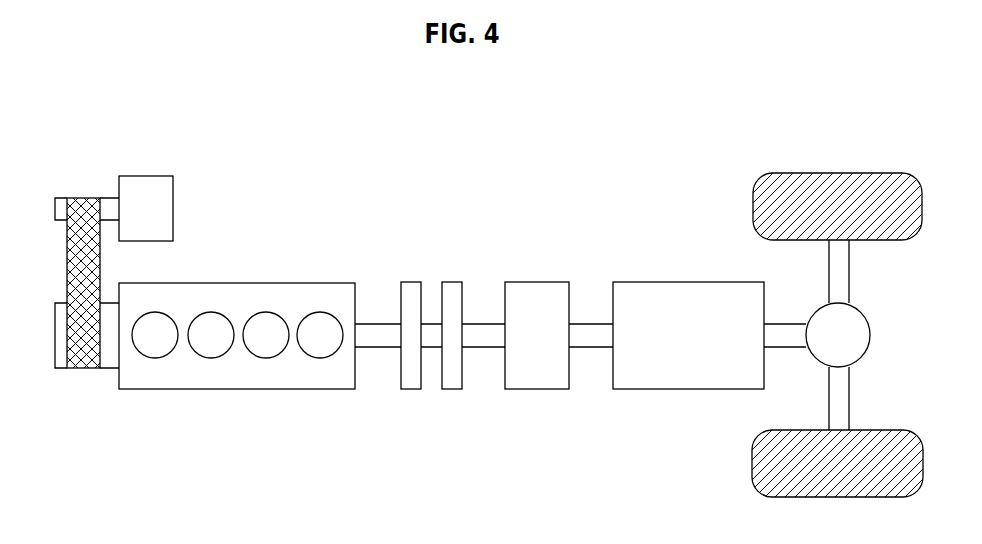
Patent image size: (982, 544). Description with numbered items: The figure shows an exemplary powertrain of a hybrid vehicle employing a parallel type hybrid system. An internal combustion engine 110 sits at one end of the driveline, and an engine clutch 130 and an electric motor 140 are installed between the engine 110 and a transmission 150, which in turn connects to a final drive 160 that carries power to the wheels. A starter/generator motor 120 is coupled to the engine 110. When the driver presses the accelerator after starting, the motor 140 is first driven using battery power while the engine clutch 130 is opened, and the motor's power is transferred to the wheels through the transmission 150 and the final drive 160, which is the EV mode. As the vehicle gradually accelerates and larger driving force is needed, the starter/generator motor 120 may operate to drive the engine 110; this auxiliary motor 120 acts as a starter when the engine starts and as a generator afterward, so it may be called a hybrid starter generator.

The internal combustion engine 110 is at (330, 283).
The starter/generator motor 120 is at (173, 180).
The engine clutch 130 is at (447, 282).
The electric motor 140 is at (533, 282).
The transmission 150 is at (684, 282).
The final drive 160 is at (869, 312).